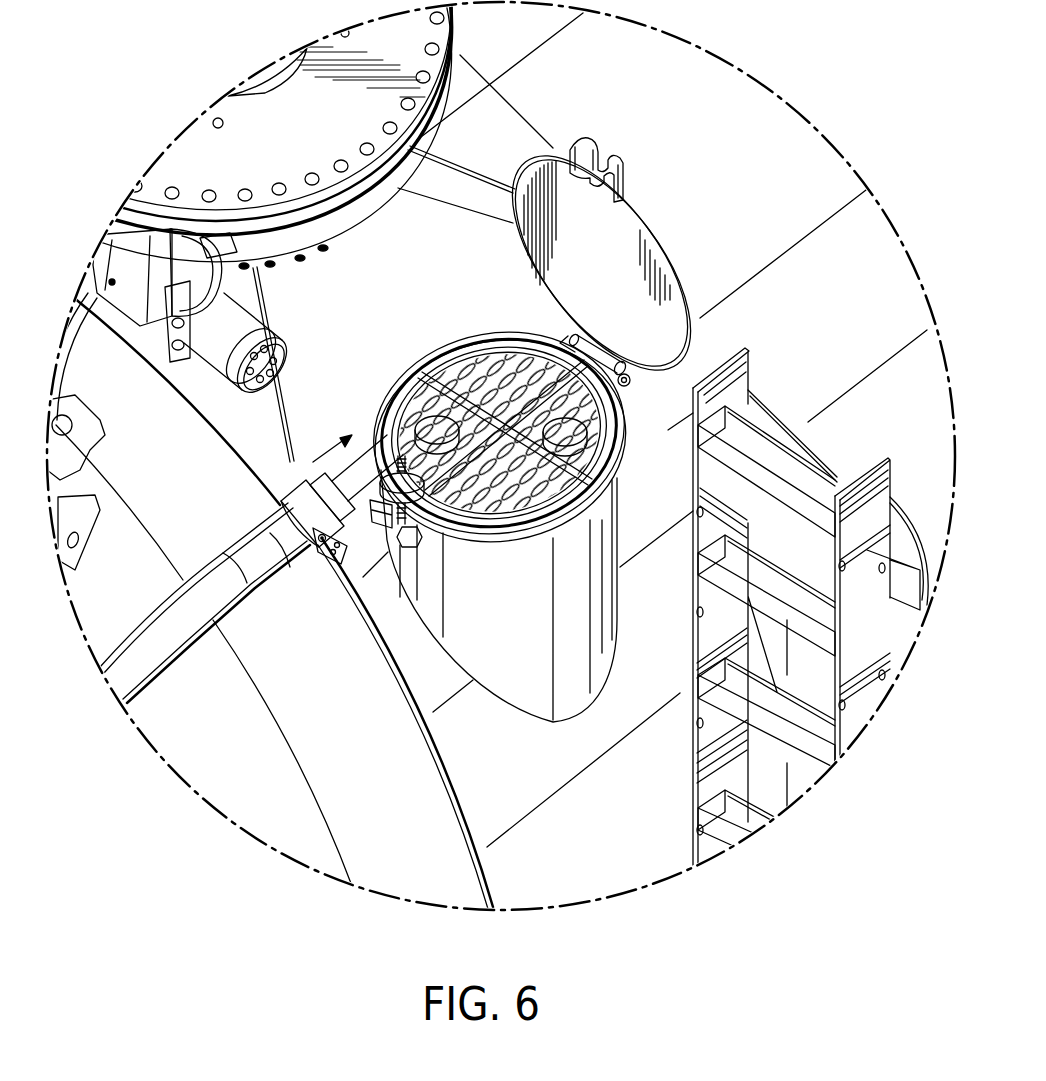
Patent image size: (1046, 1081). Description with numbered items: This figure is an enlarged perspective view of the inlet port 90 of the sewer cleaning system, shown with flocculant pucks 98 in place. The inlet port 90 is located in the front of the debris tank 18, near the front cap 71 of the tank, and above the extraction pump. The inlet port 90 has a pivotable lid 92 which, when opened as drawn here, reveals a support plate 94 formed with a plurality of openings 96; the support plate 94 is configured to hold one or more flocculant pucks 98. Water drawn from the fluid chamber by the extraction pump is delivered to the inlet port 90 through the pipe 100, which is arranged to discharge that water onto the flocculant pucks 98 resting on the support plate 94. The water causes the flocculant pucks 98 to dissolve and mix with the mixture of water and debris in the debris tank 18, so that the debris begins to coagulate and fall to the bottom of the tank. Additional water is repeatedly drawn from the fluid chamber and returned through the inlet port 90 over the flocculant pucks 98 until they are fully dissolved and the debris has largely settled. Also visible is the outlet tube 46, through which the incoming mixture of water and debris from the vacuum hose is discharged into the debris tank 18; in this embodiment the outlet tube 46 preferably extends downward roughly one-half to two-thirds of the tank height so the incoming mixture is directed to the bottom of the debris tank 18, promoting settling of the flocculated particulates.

The debris tank 18 is at (753, 112).
The outlet tube 46 is at (267, 78).
The front cap 71 is at (220, 787).
The inlet port 90 is at (600, 598).
The pivotable lid 92 is at (655, 232).
The support plate 94 is at (497, 383).
The openings 96 is at (503, 497).
The flocculant pucks 98 is at (423, 423).
The pipe 100 is at (276, 566).